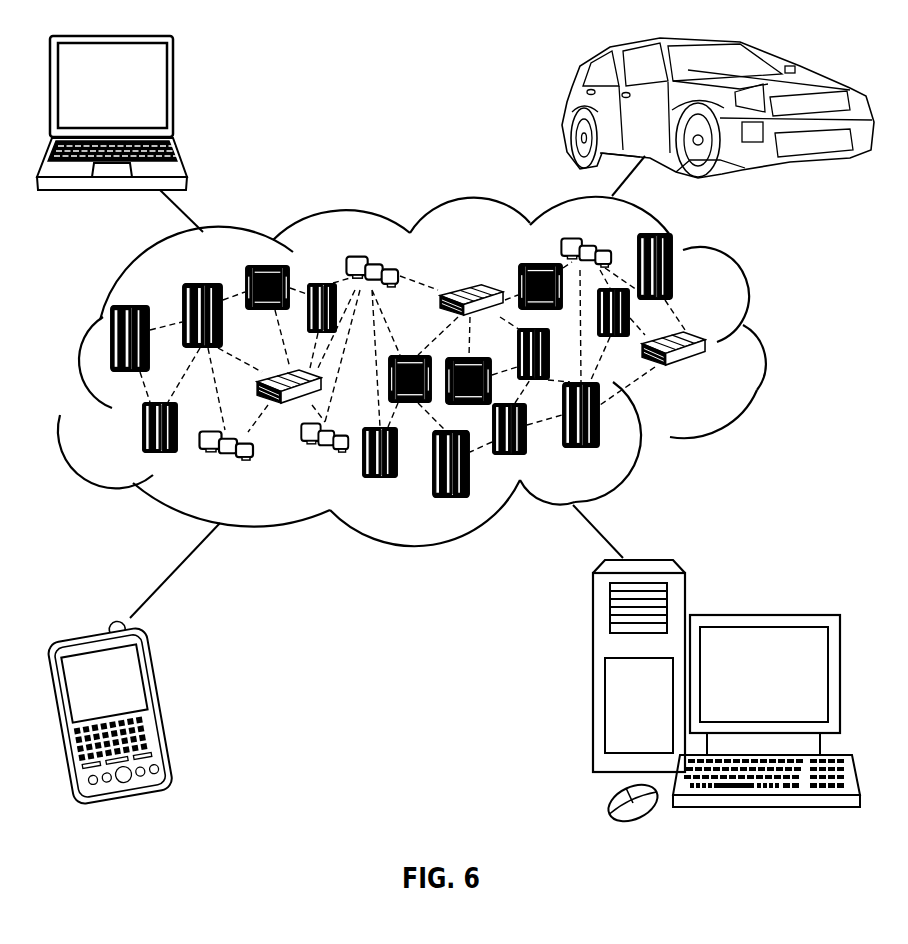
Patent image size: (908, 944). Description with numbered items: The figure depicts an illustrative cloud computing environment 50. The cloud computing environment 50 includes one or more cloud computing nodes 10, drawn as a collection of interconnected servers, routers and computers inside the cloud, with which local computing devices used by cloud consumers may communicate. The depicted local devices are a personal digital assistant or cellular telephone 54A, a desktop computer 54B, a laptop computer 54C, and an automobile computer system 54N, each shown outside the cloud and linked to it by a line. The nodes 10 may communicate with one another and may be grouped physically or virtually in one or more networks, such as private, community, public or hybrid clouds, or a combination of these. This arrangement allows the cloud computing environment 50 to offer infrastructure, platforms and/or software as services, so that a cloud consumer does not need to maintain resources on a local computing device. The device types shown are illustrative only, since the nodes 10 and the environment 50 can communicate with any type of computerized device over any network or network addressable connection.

The cloud computing node 10 is at (712, 374).
The cloud computing environment 50 is at (762, 350).
The personal digital assistant or cellular telephone 54A is at (163, 703).
The desktop computer 54B is at (762, 613).
The laptop computer 54C is at (175, 93).
The automobile computer system 54N is at (567, 106).